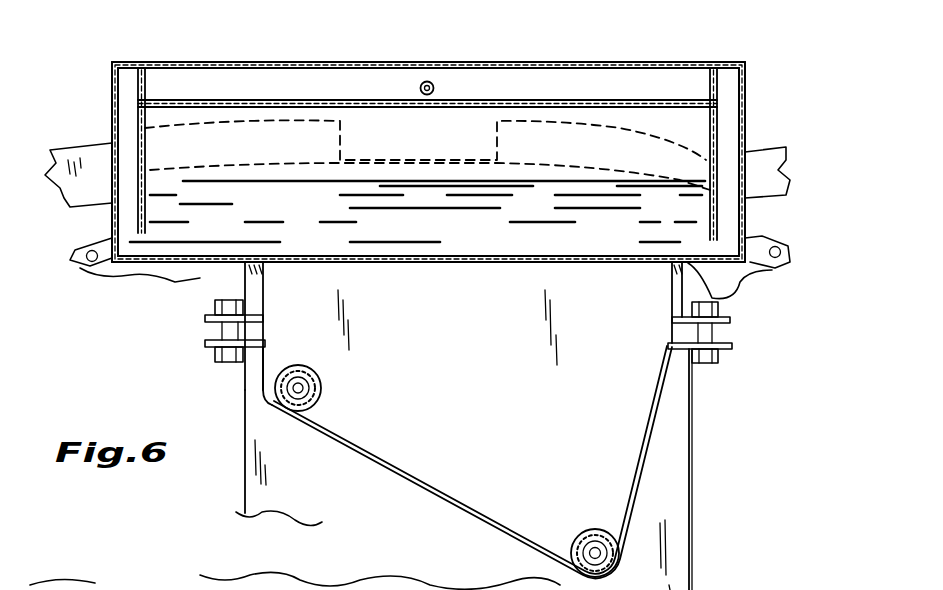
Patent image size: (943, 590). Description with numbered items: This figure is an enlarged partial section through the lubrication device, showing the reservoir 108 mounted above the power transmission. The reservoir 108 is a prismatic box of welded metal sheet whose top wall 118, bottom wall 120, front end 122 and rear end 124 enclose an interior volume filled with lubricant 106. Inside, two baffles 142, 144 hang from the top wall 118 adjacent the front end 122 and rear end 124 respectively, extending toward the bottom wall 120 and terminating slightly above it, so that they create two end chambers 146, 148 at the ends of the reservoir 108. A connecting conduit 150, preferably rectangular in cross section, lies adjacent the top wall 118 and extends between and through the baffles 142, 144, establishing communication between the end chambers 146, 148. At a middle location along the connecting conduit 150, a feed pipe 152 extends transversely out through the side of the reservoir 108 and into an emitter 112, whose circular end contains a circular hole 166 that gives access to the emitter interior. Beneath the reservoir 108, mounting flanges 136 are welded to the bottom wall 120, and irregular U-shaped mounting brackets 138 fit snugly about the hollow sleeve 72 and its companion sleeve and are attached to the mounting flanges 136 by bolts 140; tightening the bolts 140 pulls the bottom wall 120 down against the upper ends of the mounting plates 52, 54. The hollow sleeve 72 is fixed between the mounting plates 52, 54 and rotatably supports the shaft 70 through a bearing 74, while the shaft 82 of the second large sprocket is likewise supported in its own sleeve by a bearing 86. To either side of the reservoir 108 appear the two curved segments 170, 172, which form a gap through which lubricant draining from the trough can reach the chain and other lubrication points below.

The reservoir 108 is at (684, 60).
The top wall 118 is at (640, 40).
The bottom wall 120 is at (635, 263).
The front end 122 is at (748, 84).
The rear end 124 is at (112, 86).
The connecting conduit 150 is at (263, 88).
The feed pipe 152 is at (480, 36).
The baffle 144 is at (140, 135).
The baffle 142 is at (706, 162).
The end chamber 148 is at (145, 123).
The lubricant 106 is at (438, 232).
The curved segment 172 is at (115, 208).
The curved segment 170 is at (756, 166).
The end chamber 146 is at (772, 268).
The mounting flange 136 is at (265, 297).
The bolt 140 is at (717, 330).
The shaft 82 is at (283, 365).
The mounting plate 54 is at (318, 376).
The bearing 86 is at (312, 408).
The shaft 70 is at (587, 530).
The bearing 74 is at (592, 527).
The hollow sleeve 72 is at (598, 530).
The mounting bracket 138 is at (410, 486).
The mounting plate 52 is at (293, 493).
The circular hole 166 is at (742, 469).
The emitter 112 is at (295, 581).